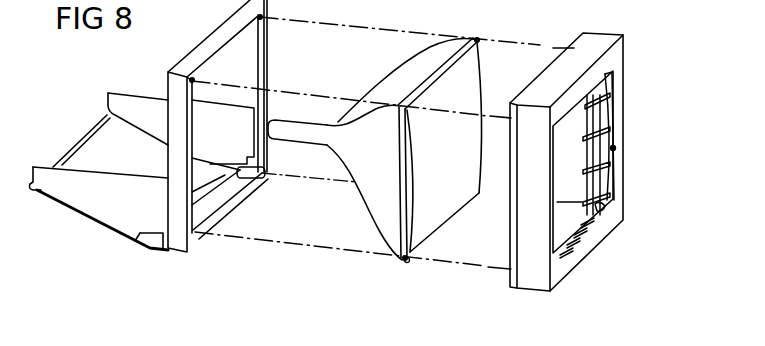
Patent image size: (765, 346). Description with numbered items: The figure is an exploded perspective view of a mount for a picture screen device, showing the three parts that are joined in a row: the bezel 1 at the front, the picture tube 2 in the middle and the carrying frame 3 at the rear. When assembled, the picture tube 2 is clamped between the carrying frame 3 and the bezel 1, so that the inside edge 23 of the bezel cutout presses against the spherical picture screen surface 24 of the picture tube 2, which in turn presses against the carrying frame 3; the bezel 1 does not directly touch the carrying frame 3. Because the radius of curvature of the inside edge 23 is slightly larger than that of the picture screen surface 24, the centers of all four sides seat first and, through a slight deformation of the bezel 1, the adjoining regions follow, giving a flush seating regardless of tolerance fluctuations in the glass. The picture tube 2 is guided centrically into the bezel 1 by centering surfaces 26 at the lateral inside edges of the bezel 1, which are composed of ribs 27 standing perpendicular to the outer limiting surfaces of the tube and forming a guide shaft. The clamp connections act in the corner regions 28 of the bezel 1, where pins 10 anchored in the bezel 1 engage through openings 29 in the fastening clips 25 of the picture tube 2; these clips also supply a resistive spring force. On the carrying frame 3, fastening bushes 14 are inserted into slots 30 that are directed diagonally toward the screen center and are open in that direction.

The bezel 1 is at (585, 250).
The picture tube 2 is at (412, 70).
The carrying frame 3 is at (183, 254).
The pins 10 is at (502, 269).
The fastening bushes 14 is at (203, 82).
The inside edge of the bezel cutout 23 is at (617, 150).
The picture screen surface 24 is at (453, 178).
The fastening clips 25 is at (479, 43).
The centering surfaces 26 is at (603, 122).
The ribs 27 is at (614, 148).
The corner regions 28 is at (602, 217).
The openings 29 is at (408, 263).
The slots 30 is at (200, 246).